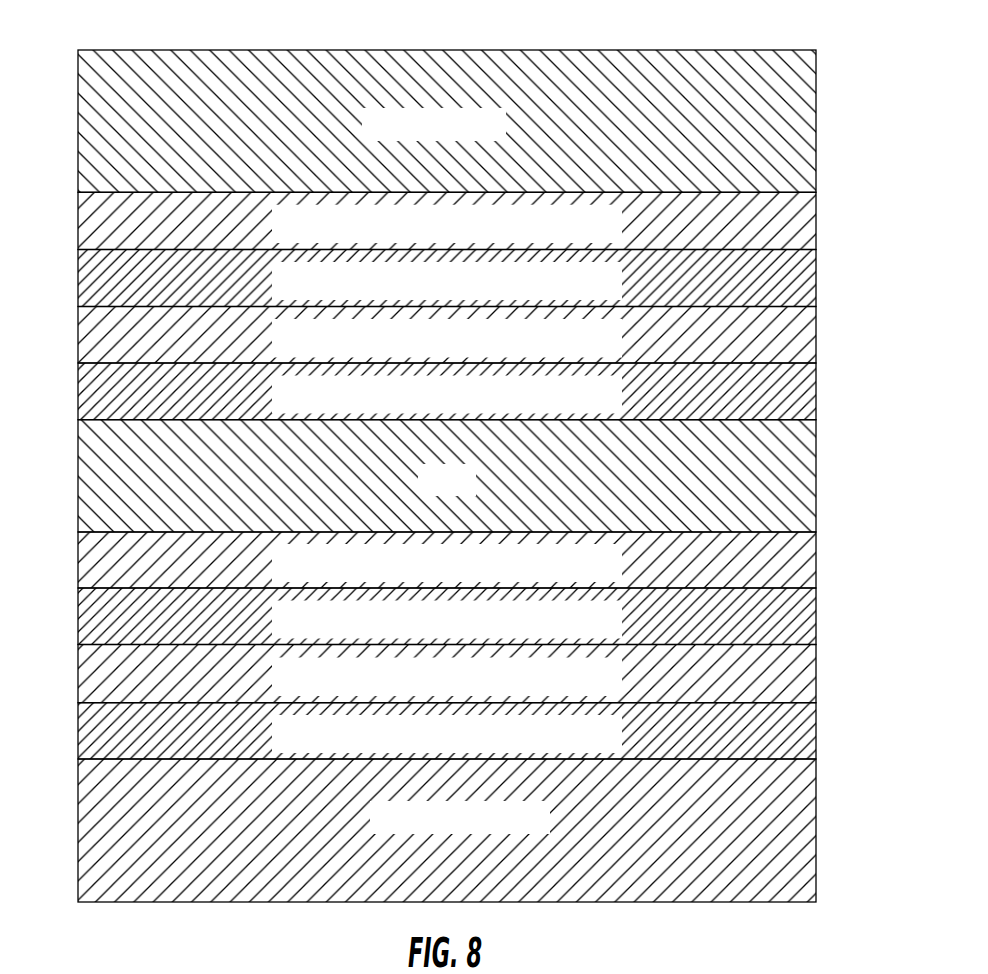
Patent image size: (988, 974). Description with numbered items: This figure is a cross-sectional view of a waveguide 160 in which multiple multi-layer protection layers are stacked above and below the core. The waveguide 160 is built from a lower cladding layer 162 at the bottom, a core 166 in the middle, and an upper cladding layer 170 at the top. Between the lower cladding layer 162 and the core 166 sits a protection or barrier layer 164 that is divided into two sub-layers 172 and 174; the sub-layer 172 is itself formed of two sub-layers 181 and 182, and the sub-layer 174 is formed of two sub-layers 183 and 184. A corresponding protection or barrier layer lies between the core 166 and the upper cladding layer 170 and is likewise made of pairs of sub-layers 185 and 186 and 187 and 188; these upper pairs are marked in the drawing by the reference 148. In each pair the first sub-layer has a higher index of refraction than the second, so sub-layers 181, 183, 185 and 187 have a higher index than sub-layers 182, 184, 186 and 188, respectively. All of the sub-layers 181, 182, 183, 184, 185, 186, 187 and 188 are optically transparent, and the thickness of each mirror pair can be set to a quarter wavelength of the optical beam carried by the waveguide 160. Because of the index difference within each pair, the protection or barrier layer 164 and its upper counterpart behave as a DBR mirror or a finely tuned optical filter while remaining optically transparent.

The waveguide 160 is at (63, 33).
The upper cladding layer 170 is at (798, 110).
The DBR mirror protection layer pair 148 is at (447, 309).
The sub-layer 188 is at (96, 222).
The sub-layer 187 is at (96, 278).
The sub-layer 186 is at (96, 334).
The sub-layer 185 is at (96, 391).
The core 166 is at (798, 469).
The protection or barrier layer 164 is at (470, 630).
The sub-layer 172 is at (447, 595).
The sub-layer 174 is at (447, 709).
The sub-layer 181 is at (96, 560).
The sub-layer 182 is at (96, 616).
The sub-layer 183 is at (96, 674).
The sub-layer 184 is at (96, 731).
The lower cladding layer 162 is at (798, 830).